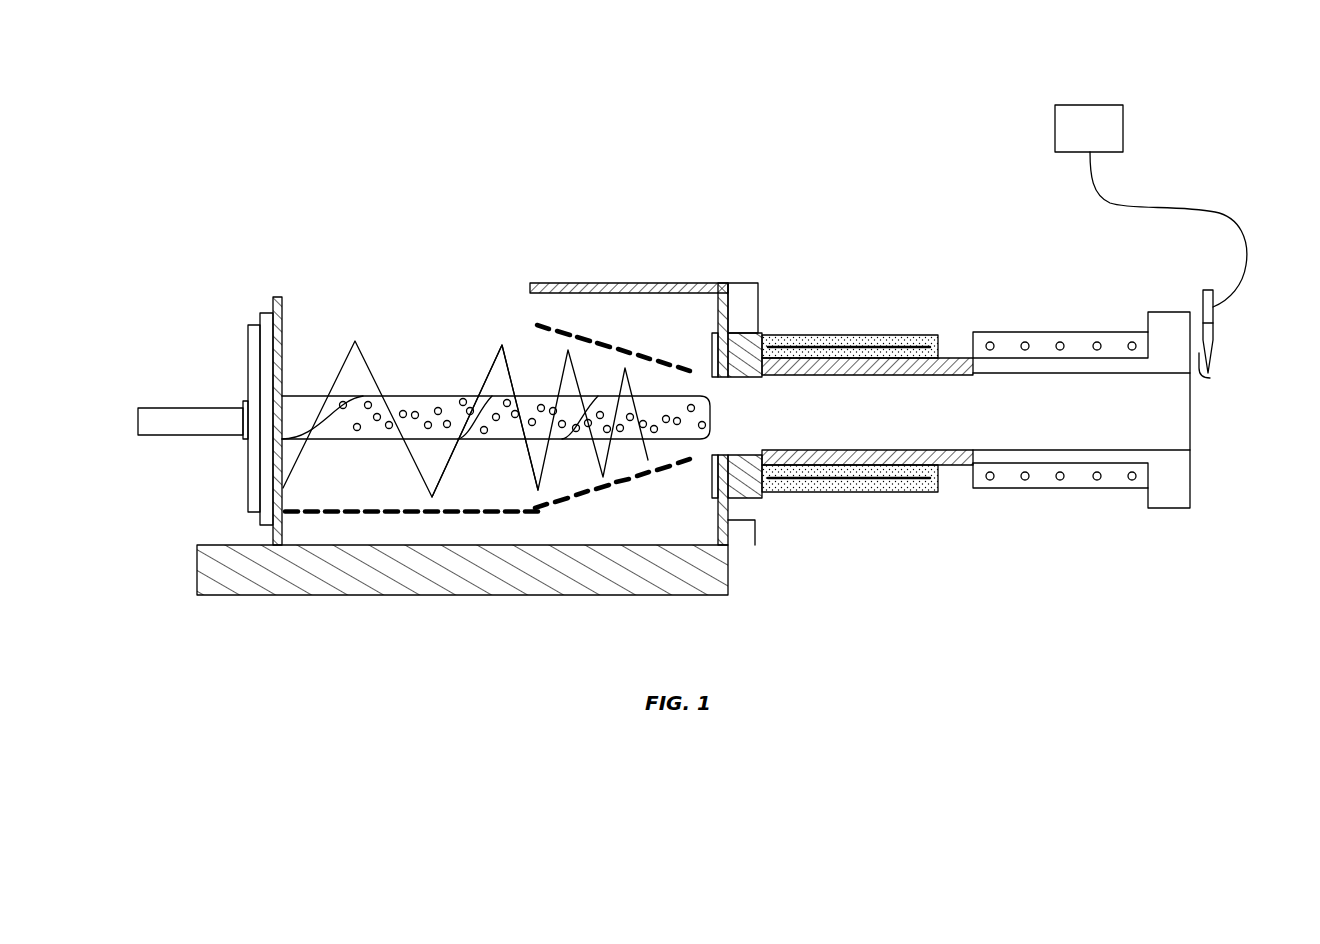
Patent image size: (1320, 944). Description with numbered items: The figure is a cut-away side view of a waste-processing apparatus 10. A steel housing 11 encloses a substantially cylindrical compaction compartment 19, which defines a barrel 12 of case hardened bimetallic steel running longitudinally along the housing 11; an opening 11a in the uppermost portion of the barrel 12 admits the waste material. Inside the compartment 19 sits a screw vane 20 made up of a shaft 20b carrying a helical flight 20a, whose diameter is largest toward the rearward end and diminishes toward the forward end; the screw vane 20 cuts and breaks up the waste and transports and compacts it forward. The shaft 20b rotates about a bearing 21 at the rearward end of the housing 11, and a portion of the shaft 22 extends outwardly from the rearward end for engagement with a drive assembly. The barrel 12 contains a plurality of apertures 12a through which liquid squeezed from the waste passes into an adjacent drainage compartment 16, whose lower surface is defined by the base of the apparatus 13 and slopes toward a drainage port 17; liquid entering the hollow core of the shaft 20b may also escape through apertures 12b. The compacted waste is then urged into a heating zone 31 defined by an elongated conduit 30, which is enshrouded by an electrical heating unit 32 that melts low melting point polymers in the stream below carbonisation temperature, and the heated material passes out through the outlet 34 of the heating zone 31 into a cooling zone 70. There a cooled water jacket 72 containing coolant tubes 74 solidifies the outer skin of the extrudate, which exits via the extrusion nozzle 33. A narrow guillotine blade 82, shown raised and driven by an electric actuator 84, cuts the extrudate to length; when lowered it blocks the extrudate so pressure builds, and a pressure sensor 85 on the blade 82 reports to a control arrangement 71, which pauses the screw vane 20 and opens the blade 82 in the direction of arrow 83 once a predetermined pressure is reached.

The apparatus 10 is at (632, 267).
The housing 11 is at (718, 283).
The opening 11a is at (512, 290).
The barrel 12 is at (352, 514).
The apertures 12a is at (495, 514).
The apertures 12b is at (328, 400).
The base of the apparatus 13 is at (360, 595).
The drainage compartment 16 is at (575, 308).
The drainage port 17 is at (743, 535).
The compaction compartment 19 is at (423, 343).
The screw vane 20 is at (343, 447).
The flight 20a is at (355, 341).
The shaft 20b is at (448, 398).
The bearing 21 is at (248, 347).
The portion of the shaft 22 is at (192, 408).
The conduit 30 is at (898, 498).
The heating zone 31 is at (838, 417).
The heating unit 32 is at (870, 492).
The extrusion nozzle 33 is at (1190, 397).
The outlet 34 is at (957, 417).
The cooling zone 70 is at (1053, 425).
The control arrangement 71 is at (743, 308).
The cooled water jacket 72 is at (1043, 345).
The tubes 74 is at (1062, 478).
The blade 82 is at (1216, 344).
The arrow 83 is at (1207, 278).
The electric actuator 84 is at (1151, 206).
The pressure sensor 85 is at (1203, 378).